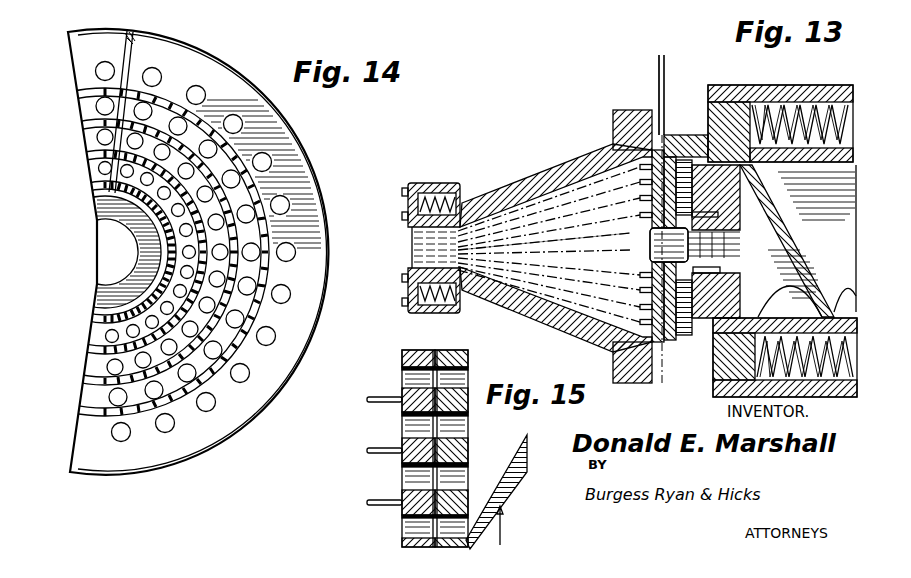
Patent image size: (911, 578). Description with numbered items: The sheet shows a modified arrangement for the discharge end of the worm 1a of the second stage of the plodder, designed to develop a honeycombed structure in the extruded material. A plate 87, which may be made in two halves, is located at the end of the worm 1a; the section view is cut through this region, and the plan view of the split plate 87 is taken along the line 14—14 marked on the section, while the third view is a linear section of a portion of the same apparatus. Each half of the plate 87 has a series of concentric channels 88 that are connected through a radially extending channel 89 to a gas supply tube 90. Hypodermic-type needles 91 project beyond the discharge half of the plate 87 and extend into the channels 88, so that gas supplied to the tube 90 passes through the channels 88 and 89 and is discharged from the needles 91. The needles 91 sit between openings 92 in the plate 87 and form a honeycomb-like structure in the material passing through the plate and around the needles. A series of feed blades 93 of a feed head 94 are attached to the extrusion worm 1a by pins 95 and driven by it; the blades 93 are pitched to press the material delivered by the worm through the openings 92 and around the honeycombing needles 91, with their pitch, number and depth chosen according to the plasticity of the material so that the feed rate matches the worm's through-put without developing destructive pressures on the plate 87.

In FIG. 14, the plate 87 is at (291, 131).
In FIG. 13, the plate 87 is at (652, 246).
In FIG. 15, the plate 87 is at (467, 355).
In FIG. 14, the concentric channels 88 is at (252, 168).
In FIG. 14, the radially extending channel 89 is at (135, 58).
In FIG. 14, the openings 92 is at (290, 201).
In FIG. 13, the gas supply tube 90 is at (658, 82).
In FIG. 13, the section line 14- 14 is at (700, 78).
In FIG. 13, the feed head 94 is at (668, 110).
In FIG. 13, the pins 95 is at (722, 216).
In FIG. 13, the worm 1a is at (798, 241).
In FIG. 13, the hypodermic-type needles 91 is at (642, 228).
In FIG. 15, the hypodermic-type needles 91 is at (368, 401).
In FIG. 13, the feed blades 93 is at (660, 242).
In FIG. 15, the feed blades 93 is at (514, 480).